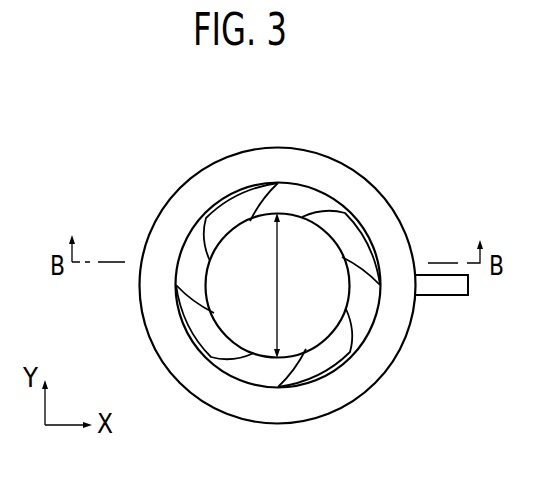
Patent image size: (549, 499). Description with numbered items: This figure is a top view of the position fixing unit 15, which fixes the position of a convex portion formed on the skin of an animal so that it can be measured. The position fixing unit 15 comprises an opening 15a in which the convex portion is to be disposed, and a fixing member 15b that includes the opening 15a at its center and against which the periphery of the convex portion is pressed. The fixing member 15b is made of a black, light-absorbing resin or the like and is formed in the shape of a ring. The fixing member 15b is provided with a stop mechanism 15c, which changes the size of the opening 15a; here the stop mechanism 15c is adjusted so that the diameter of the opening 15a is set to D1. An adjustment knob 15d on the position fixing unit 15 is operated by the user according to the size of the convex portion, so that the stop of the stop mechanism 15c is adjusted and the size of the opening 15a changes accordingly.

The position fixing unit 15 is at (391, 139).
The opening 15a is at (252, 239).
The fixing member 15b is at (373, 195).
The stop mechanism 15c is at (328, 363).
The adjustment knob 15d is at (448, 295).
The diameter of the opening D1 is at (277, 305).